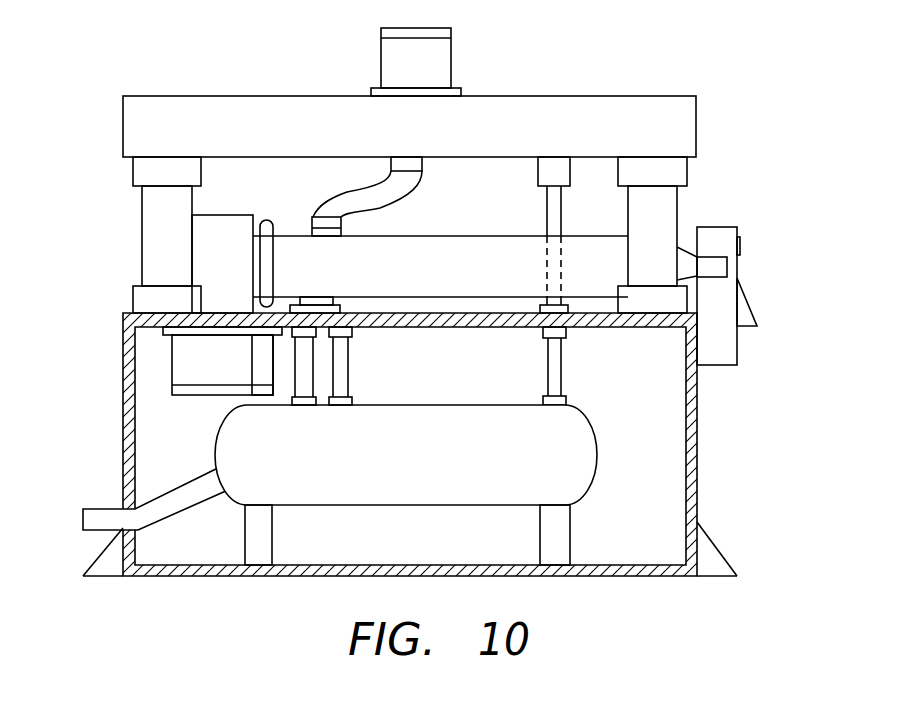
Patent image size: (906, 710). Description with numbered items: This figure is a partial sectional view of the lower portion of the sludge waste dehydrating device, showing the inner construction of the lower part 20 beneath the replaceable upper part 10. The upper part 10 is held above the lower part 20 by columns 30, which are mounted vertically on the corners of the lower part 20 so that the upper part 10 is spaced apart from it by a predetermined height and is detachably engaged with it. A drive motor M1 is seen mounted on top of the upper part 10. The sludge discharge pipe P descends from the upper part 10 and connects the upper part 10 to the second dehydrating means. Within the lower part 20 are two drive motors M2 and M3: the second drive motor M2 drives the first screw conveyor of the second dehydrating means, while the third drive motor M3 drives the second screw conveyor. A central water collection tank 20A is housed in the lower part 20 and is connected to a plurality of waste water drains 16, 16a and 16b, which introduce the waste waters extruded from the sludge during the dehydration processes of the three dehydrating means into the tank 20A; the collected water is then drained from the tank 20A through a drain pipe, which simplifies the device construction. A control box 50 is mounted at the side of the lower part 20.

The replaceable upper part 10 is at (651, 88).
The first motor M1 is at (436, 57).
The columns 30 is at (155, 252).
The sludge discharge pipe P is at (340, 203).
The waste water drain 16 is at (548, 208).
The control box 50 is at (720, 236).
The lower part 20 is at (113, 456).
The central water collection tank 20A is at (580, 470).
The third drive motor M3 is at (180, 367).
The second drive motor M2 is at (262, 370).
The waste water drain 16a is at (308, 352).
The waste water drain 16b is at (343, 378).